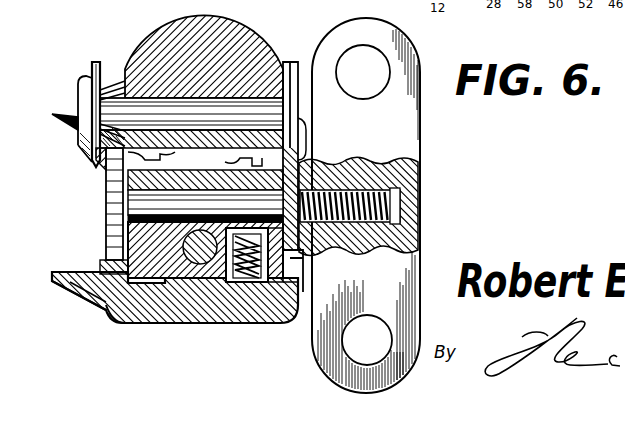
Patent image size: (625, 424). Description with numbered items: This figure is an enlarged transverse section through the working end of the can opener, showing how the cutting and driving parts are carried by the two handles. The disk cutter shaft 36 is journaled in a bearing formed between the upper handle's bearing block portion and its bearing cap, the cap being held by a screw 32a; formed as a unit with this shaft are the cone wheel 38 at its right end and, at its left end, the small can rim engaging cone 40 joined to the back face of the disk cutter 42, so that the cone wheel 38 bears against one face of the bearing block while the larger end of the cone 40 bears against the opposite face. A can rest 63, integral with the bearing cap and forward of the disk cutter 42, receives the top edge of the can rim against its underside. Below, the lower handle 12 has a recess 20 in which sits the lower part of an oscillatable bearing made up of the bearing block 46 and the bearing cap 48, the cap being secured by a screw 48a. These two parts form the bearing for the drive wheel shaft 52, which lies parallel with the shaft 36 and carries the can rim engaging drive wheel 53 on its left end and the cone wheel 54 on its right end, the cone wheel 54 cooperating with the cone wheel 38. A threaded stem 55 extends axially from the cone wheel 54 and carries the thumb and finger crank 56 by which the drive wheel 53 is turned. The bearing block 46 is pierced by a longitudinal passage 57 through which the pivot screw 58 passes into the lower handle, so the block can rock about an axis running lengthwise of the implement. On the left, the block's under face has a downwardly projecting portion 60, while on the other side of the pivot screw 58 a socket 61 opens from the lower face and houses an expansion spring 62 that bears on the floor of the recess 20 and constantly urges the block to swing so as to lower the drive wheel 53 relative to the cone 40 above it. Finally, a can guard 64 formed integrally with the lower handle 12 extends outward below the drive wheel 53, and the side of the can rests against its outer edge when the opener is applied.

The lower handle 12 is at (152, 320).
The recess 20 is at (227, 323).
The screw 32a is at (98, 166).
The disk cutter shaft 36 is at (153, 72).
The cone wheel 38 is at (285, 87).
The can rim engaging cone 40 is at (118, 93).
The disk cutter 42 is at (90, 73).
The bearing block 46 is at (104, 303).
The bearing cap 48 is at (126, 192).
The screw 48a is at (240, 162).
The drive wheel shaft 52 is at (126, 212).
The can rim engaging drive wheel 53 is at (112, 178).
The cone wheel 54 is at (301, 262).
The threaded stem 55 is at (390, 204).
The thumb and finger crank 56 is at (418, 137).
The passage 57 is at (188, 270).
The pivot screw 58 is at (204, 264).
The downwardly projecting portion 60 is at (112, 316).
The socket 61 is at (236, 323).
The expansion spring 62 is at (260, 323).
The can rest 63 is at (77, 114).
The can guard 64 is at (68, 288).